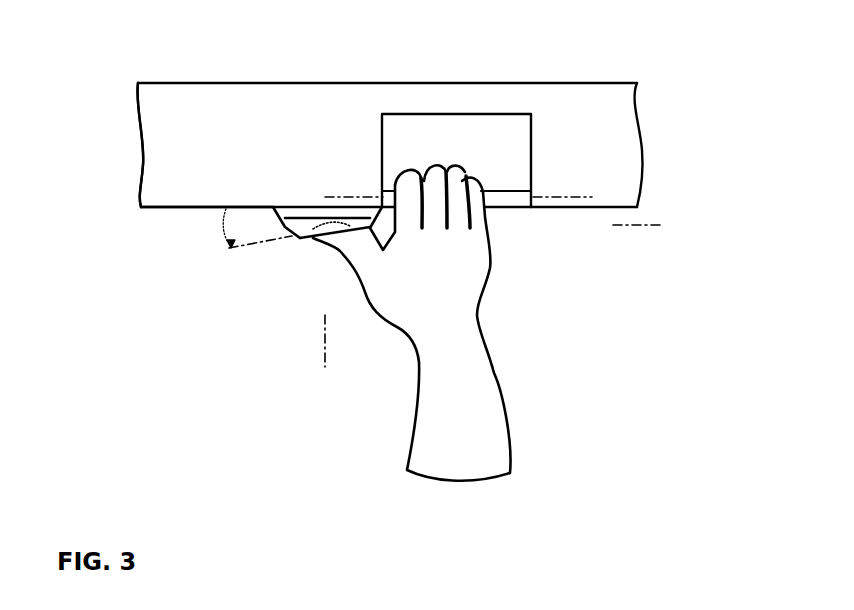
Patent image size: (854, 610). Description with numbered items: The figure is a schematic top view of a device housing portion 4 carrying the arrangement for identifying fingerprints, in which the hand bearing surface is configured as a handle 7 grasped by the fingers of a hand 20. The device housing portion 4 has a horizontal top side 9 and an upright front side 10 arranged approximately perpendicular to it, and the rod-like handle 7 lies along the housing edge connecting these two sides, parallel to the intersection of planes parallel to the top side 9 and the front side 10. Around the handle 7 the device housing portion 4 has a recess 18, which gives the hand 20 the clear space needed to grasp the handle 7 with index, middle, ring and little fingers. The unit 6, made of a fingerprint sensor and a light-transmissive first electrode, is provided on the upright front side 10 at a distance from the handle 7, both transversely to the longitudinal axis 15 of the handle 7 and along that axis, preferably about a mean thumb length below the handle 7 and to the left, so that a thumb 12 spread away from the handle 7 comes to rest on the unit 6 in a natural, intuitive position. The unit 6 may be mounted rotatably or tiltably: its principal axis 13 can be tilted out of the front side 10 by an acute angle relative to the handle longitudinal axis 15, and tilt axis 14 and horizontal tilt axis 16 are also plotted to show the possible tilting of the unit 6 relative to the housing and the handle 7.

The device housing portion 4 is at (242, 69).
The unit 6 is at (301, 239).
The handle 7 is at (503, 202).
The top side 9 is at (192, 196).
The front side 10 is at (153, 211).
The thumb 12 is at (334, 244).
The principal axis 13 is at (272, 240).
The tilt axis 14 is at (325, 338).
The longitudinal axis 15 is at (352, 194).
The horizontal tilt axis 16 is at (643, 226).
The recess 18 is at (521, 168).
The hand 20 is at (473, 281).